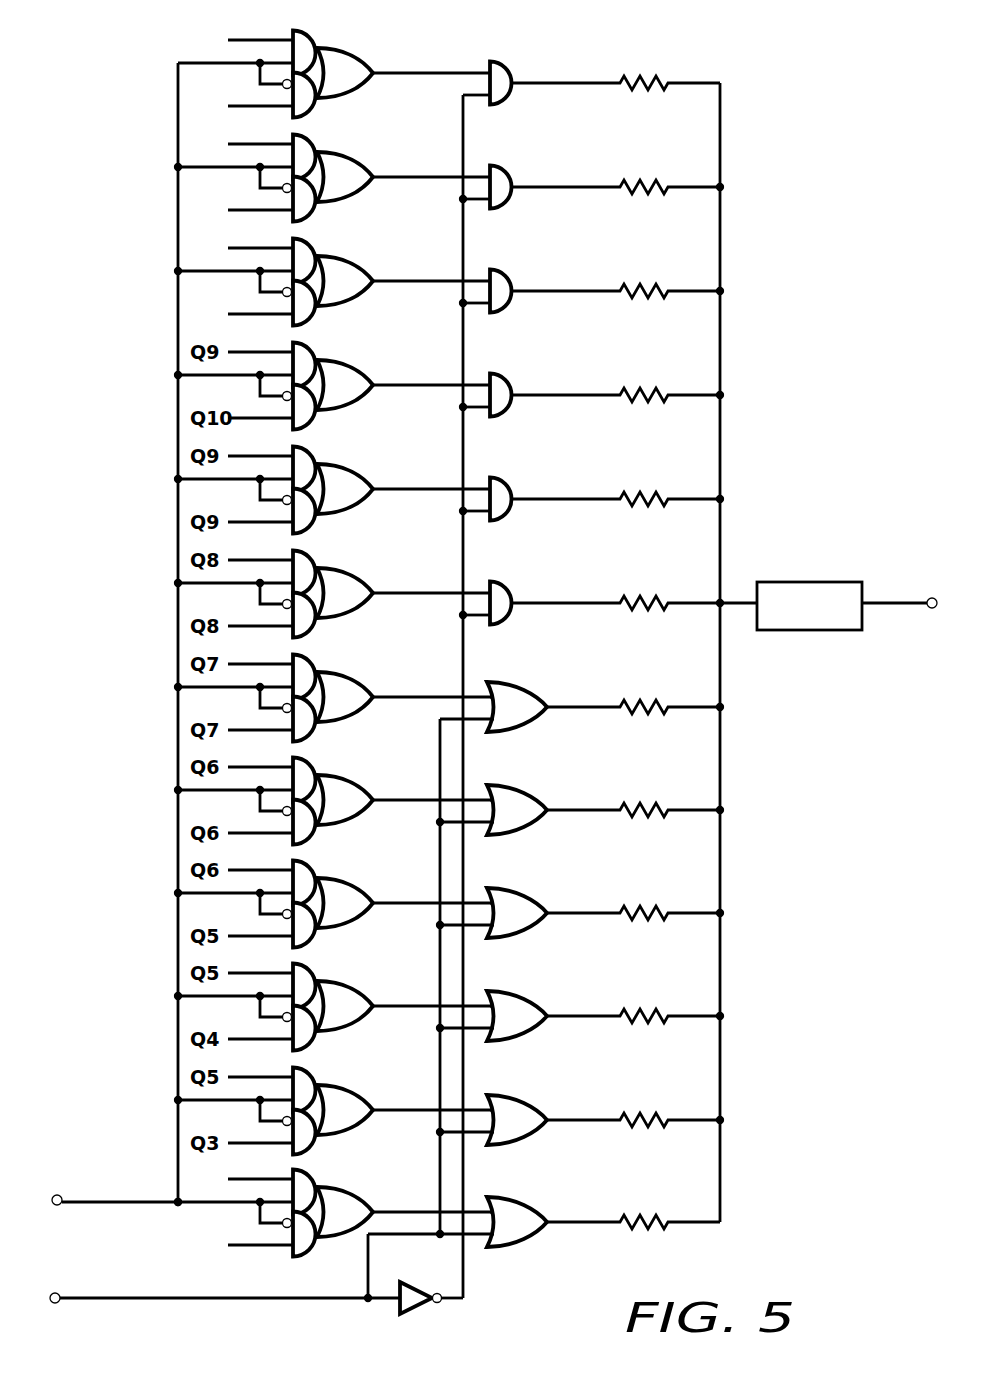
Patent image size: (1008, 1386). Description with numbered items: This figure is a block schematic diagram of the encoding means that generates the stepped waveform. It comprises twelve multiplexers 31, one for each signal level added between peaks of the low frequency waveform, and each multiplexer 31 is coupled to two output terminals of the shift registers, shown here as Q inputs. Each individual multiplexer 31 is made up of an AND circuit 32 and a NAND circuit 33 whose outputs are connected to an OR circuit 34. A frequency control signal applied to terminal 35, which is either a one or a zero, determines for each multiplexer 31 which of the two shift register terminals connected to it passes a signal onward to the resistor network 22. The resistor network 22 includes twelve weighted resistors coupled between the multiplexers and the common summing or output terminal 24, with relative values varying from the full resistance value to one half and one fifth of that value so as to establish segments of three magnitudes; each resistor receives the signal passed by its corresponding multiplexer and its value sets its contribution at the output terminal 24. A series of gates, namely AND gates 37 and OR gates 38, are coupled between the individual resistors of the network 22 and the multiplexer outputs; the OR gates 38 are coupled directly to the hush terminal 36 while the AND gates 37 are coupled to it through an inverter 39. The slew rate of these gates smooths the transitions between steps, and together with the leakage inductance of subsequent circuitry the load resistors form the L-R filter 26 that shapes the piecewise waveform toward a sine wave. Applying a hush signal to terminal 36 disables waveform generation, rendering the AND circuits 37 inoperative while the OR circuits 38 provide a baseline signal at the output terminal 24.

The resistor network 22 is at (752, 266).
The output terminal 24 is at (931, 597).
The filter 26 is at (822, 558).
The multiplexer 31 is at (333, 48).
The AND circuit 32 is at (313, 254).
The NAND circuit 33 is at (313, 306).
The OR circuit 34 is at (352, 283).
The frequency control signal terminal 35 is at (58, 1206).
The hush signal terminal 36 is at (55, 1304).
The AND gate 37 is at (508, 63).
The OR gate 38 is at (511, 689).
The inverter 39 is at (436, 1262).